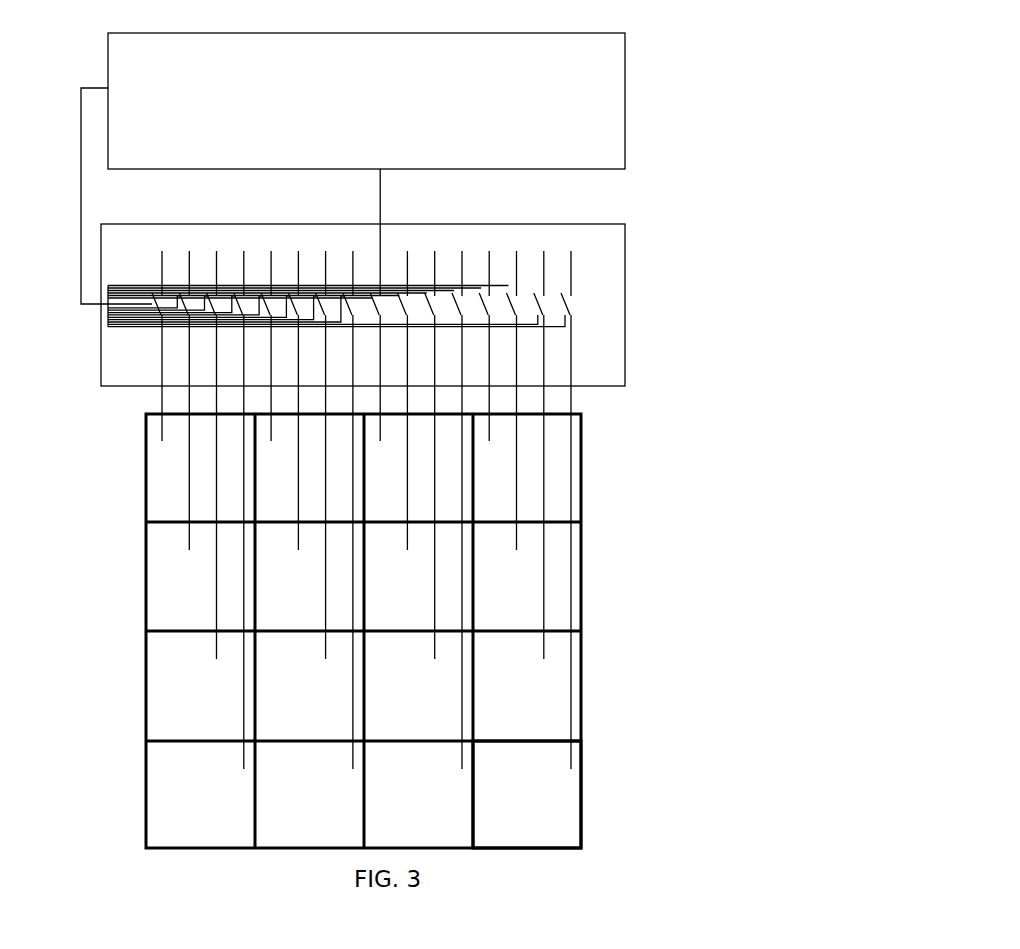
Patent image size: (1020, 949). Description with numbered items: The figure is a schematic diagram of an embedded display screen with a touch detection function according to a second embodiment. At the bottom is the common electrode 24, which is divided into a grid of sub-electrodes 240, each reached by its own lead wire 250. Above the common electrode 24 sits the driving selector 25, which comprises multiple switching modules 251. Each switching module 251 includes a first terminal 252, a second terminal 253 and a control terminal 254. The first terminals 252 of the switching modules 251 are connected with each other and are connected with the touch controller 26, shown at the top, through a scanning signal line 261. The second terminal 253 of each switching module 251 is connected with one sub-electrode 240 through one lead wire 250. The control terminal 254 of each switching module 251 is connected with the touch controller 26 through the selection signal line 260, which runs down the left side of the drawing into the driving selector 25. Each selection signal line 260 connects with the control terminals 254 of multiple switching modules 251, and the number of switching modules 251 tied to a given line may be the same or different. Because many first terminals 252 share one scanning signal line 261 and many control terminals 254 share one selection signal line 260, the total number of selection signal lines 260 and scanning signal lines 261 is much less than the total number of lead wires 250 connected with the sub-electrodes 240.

The common electrode 24 is at (583, 450).
The driving selector 25 is at (549, 224).
The touch controller 26 is at (625, 110).
The sub-electrode 240 is at (560, 820).
The lead wire 250 is at (570, 593).
The switching module 251 is at (437, 495).
The first terminal 252 is at (571, 250).
The second terminal 253 is at (435, 542).
The control terminal 254 is at (562, 300).
The selection signal line 260 is at (92, 87).
The scanning signal line 261 is at (381, 202).